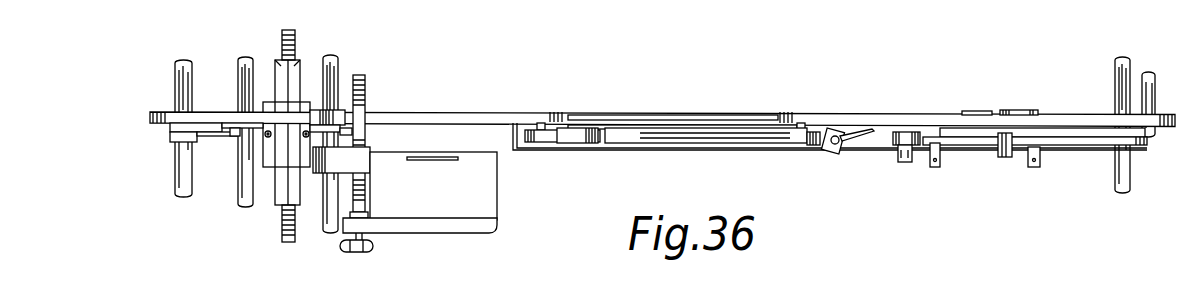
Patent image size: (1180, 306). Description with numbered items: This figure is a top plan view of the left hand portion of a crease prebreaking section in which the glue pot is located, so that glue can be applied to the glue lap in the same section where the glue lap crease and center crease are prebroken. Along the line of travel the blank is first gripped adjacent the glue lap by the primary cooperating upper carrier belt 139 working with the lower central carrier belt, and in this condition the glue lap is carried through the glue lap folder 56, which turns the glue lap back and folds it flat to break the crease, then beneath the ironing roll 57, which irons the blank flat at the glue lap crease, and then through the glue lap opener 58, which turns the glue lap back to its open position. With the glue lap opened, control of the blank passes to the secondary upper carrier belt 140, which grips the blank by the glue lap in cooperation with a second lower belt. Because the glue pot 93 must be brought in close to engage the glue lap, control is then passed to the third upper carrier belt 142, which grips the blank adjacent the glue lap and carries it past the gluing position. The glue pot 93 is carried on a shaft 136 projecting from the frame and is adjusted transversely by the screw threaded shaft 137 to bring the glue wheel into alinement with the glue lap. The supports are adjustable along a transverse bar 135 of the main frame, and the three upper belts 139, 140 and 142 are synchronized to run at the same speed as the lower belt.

The third upper carrier belt 142 is at (443, 117).
The primary cooperating upper carrier belt 139 is at (832, 120).
The secondary upper carrier belt 140 is at (733, 135).
The glue lap opener 58 is at (843, 150).
The ironing roll 57 is at (897, 148).
The glue lap folder 56 is at (947, 140).
The glue pot 93 is at (487, 177).
The transverse bar 135 is at (275, 190).
The shaft 136 is at (322, 228).
The screw threaded shaft 137 is at (365, 248).